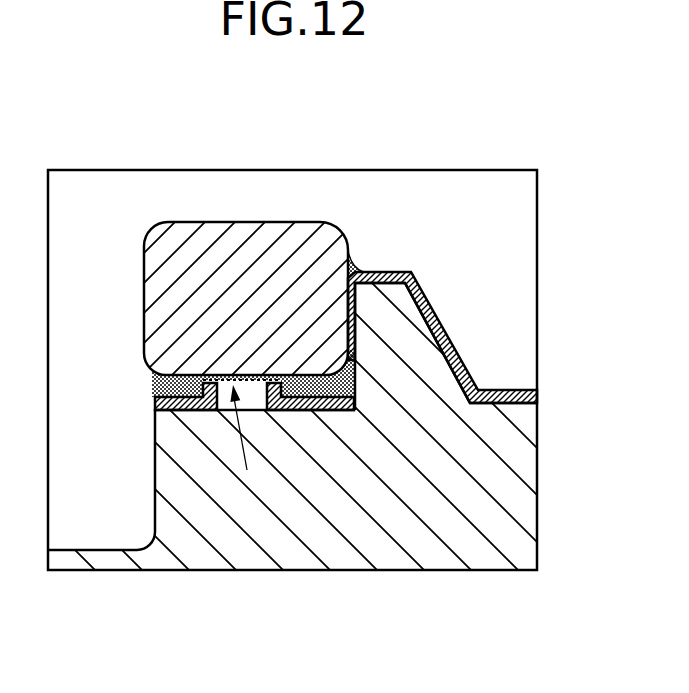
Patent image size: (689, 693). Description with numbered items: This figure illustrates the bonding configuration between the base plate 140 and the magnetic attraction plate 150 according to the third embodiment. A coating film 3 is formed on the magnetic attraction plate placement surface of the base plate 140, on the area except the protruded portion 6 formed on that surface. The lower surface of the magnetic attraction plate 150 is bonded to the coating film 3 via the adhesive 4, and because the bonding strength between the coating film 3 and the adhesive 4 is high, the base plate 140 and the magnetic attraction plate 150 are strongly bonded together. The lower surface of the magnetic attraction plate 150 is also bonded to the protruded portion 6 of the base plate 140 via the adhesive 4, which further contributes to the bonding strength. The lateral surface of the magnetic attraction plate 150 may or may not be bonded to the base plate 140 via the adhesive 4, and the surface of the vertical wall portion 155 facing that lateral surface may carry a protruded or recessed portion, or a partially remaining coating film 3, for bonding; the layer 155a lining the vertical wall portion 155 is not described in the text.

The coating film 3 is at (190, 404).
The adhesive 4 is at (154, 392).
The protruded portion 6 is at (248, 470).
The base plate 140 is at (112, 558).
The magnetic attraction plate 150 is at (228, 252).
The vertical wall portion 155 is at (395, 323).
The metal layer 155a is at (356, 337).